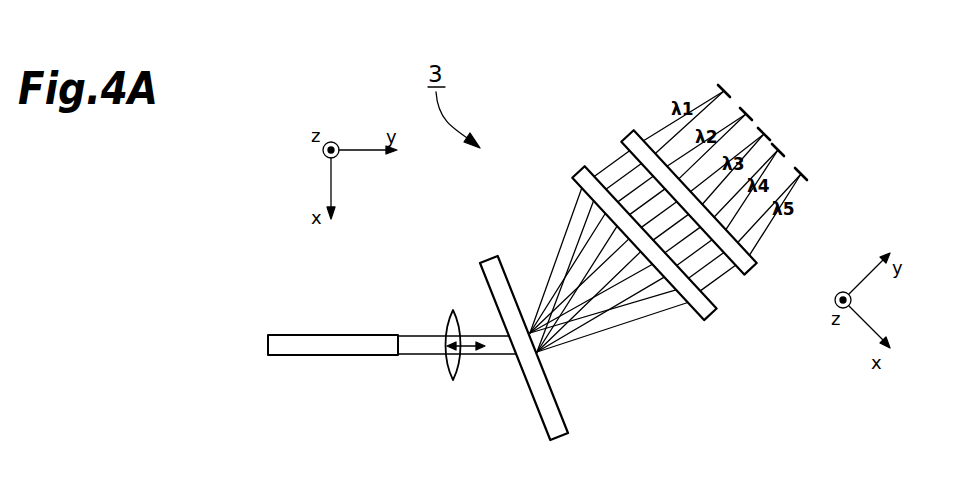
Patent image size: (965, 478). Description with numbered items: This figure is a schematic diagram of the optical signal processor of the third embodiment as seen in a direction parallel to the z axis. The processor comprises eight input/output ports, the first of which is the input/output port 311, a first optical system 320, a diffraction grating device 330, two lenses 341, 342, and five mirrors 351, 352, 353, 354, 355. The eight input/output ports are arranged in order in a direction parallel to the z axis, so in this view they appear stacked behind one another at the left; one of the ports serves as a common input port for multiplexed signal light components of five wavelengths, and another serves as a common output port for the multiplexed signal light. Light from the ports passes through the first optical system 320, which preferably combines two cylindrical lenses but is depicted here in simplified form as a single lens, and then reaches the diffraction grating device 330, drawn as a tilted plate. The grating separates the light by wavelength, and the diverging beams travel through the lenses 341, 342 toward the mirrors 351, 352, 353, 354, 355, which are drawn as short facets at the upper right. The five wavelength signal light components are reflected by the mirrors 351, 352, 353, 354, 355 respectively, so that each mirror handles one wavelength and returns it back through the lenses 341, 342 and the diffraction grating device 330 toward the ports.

The input/output port 311 is at (322, 355).
The first optical system 320 is at (450, 374).
The diffraction grating device 330 is at (557, 422).
The lens 341 is at (714, 313).
The lens 342 is at (750, 272).
The mirror 351 is at (727, 90).
The mirror 352 is at (749, 113).
The mirror 353 is at (767, 134).
The mirror 354 is at (781, 151).
The mirror 355 is at (804, 176).